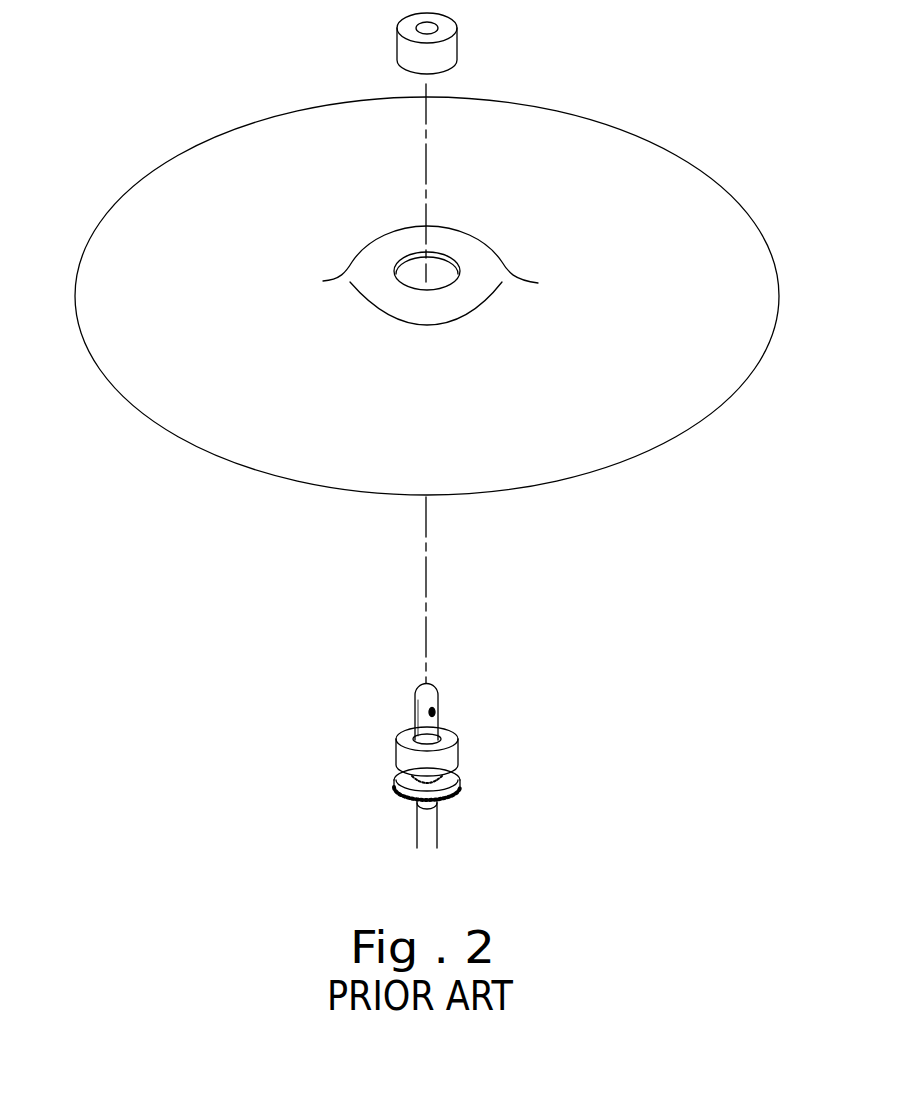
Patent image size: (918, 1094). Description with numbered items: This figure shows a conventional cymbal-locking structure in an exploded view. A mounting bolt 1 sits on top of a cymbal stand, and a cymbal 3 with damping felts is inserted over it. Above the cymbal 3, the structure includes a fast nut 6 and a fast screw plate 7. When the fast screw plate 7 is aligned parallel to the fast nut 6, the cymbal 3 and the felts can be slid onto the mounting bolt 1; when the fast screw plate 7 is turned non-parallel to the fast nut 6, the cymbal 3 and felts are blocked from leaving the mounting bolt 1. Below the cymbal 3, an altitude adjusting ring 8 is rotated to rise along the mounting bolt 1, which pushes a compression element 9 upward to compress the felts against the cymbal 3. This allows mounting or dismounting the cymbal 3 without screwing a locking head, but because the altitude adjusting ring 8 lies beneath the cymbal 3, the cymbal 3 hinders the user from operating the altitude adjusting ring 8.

The mounting bolt 1 is at (423, 828).
The cymbal 3 is at (665, 421).
The fast nut 6 is at (418, 683).
The fast screw plate 7 is at (434, 702).
The altitude adjusting ring 8 is at (397, 792).
The compression element 9 is at (433, 788).